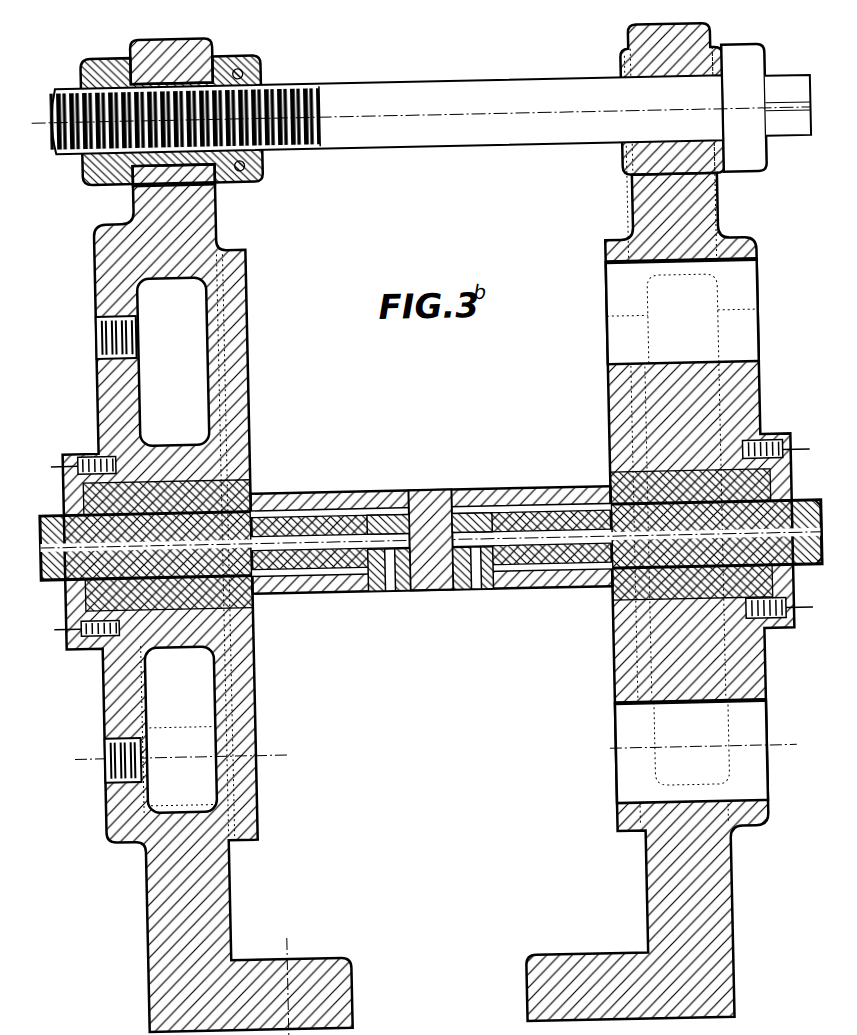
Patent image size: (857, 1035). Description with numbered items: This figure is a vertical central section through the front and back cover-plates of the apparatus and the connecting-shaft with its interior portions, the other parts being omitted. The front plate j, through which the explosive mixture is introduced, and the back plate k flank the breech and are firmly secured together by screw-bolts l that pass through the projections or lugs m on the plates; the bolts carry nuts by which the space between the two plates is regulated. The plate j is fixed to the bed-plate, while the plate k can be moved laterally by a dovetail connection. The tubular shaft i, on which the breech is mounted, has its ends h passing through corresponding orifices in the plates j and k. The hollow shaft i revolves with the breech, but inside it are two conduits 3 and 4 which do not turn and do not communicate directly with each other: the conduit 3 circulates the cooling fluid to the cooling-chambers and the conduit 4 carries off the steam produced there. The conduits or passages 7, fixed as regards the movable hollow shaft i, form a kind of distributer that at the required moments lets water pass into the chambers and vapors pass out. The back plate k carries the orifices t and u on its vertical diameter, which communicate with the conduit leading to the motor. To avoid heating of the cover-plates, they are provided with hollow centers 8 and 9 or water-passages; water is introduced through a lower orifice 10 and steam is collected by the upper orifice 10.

The projections or lugs m is at (182, 50).
The screw-bolts l is at (420, 114).
The back plate k is at (751, 247).
The orifice t is at (682, 311).
The orifice u is at (703, 751).
The front plate j is at (238, 381).
The hollow center 8 is at (173, 362).
The hollow center 9 is at (182, 729).
The orifice 10 is at (92, 340).
The tubular shaft i is at (305, 494).
The ends of the shaft h is at (84, 596).
The conduit 3 is at (364, 552).
The conduit 4 is at (493, 590).
The conduits or passages 7 is at (389, 590).